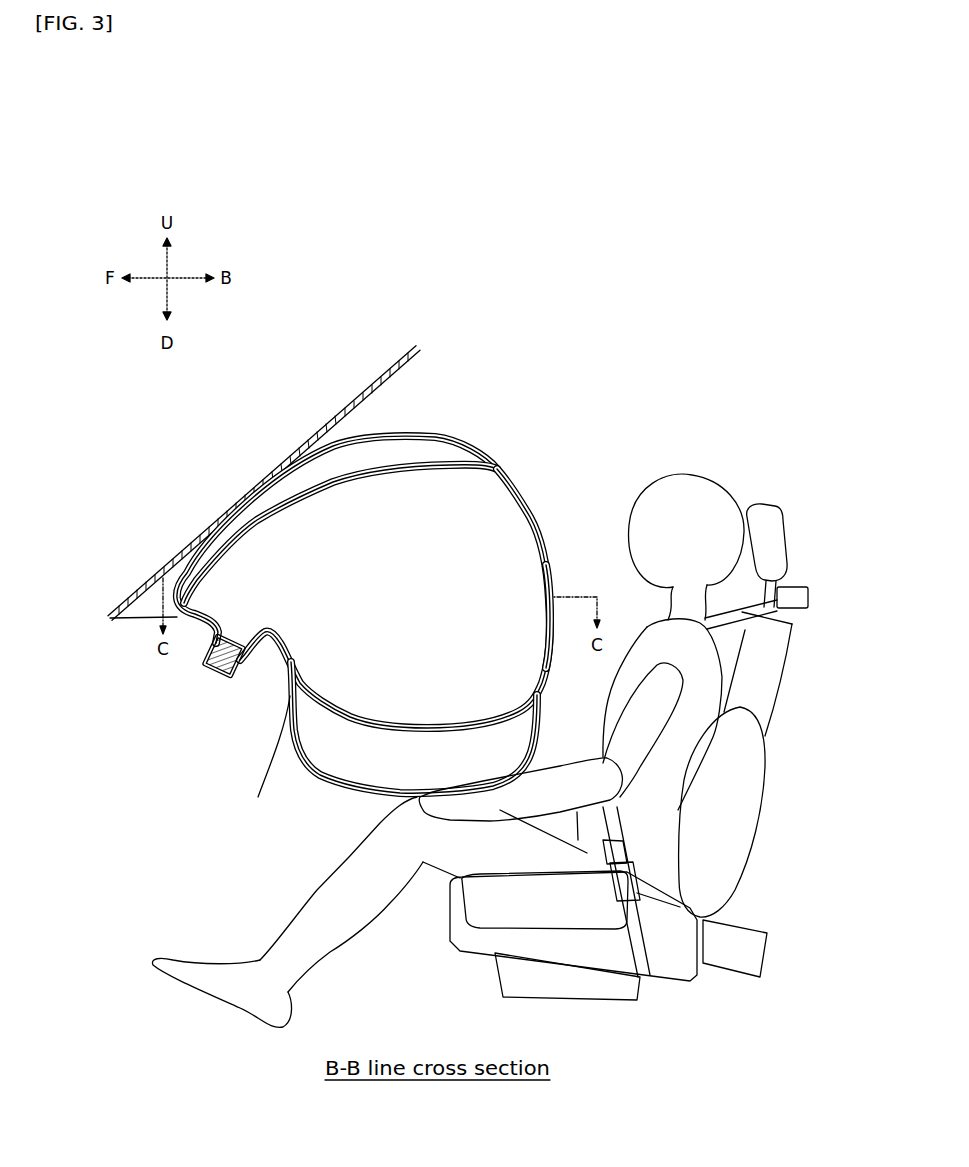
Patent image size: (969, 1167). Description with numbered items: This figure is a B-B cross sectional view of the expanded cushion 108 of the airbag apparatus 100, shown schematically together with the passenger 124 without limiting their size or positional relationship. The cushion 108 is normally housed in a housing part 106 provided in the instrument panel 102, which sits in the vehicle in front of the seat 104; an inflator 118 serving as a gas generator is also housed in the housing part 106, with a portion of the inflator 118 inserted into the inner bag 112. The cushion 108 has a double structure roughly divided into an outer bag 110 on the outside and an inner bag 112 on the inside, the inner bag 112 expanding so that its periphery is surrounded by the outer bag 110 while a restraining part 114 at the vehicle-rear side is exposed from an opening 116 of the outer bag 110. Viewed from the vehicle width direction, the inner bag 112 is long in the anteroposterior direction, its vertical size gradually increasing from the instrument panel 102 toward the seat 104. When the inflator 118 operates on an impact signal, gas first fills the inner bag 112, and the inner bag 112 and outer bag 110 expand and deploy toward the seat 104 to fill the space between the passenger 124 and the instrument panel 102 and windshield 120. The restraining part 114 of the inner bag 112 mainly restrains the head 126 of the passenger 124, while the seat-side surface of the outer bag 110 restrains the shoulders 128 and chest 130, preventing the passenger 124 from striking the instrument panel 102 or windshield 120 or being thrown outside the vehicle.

The airbag apparatus 100 is at (487, 340).
The instrument panel 102 is at (153, 616).
The seat 104 is at (656, 723).
The housing part 106 is at (263, 673).
The cushion 108 is at (430, 433).
The outer bag 110 is at (505, 462).
The inner bag 112 is at (512, 481).
The restraining part 114 is at (553, 591).
The opening 116 is at (541, 691).
The inflator 118 is at (232, 640).
The windshield 120 is at (346, 407).
The passenger 124 is at (721, 488).
The head 126 is at (697, 472).
The shoulders 128 is at (697, 635).
The chest 130 is at (458, 723).